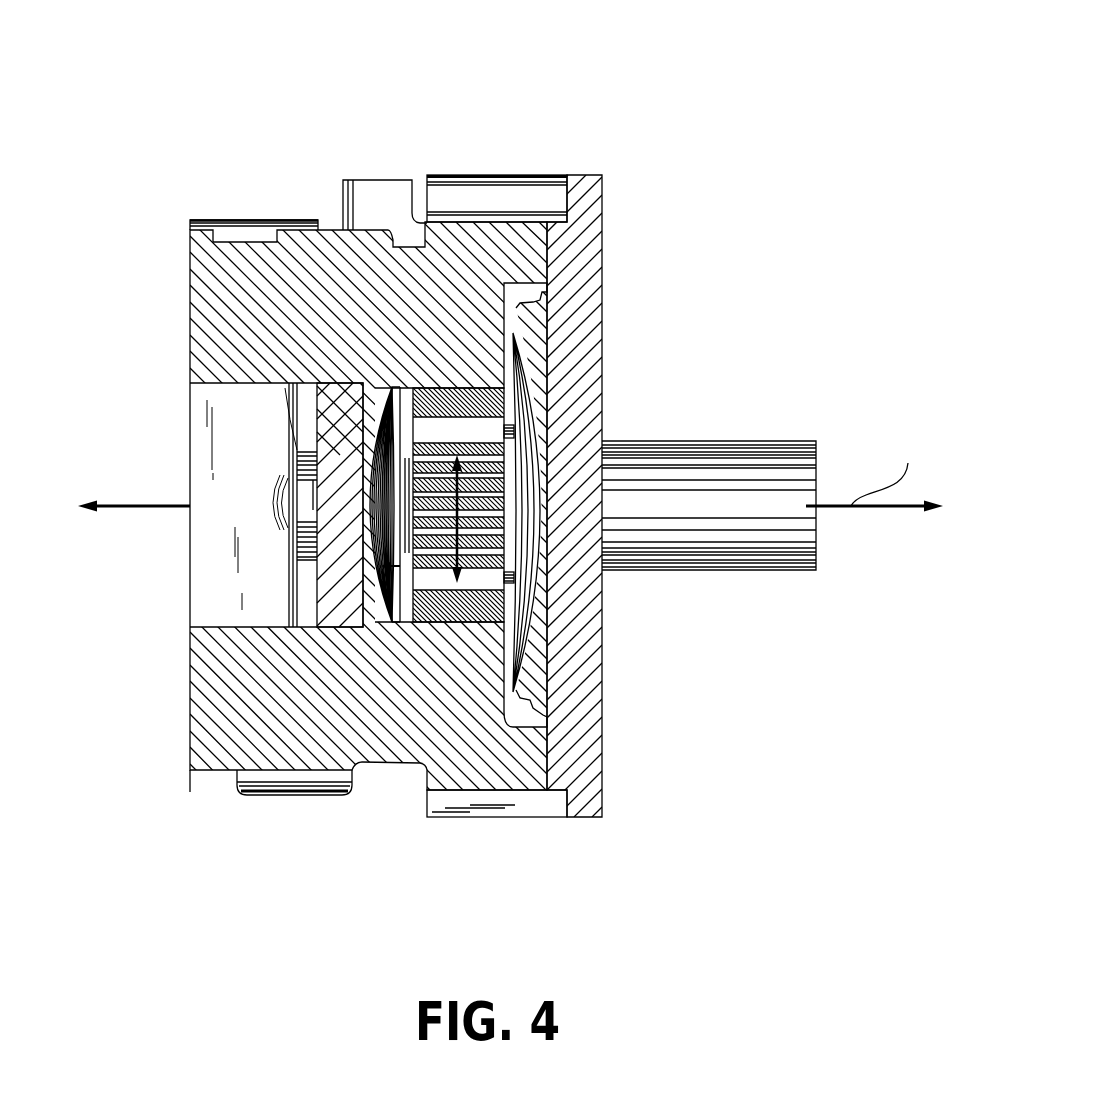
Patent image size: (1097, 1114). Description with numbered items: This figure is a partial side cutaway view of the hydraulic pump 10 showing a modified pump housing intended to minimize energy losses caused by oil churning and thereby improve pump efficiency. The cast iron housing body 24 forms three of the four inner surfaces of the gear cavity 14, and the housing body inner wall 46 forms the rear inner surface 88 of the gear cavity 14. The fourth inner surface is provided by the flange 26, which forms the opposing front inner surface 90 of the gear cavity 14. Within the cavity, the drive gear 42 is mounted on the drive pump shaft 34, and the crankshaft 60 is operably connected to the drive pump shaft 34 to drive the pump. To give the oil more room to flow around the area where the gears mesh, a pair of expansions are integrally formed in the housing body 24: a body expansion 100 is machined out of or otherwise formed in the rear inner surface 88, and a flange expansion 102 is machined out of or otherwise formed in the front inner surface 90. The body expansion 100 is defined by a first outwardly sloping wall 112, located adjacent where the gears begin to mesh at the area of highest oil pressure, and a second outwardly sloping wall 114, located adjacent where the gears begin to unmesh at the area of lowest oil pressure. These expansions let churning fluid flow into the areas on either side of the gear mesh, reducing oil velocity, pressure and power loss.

The hydraulic pump 10 is at (728, 84).
The gear cavity 14 is at (392, 563).
The housing body 24 is at (310, 222).
The flange 26 is at (602, 177).
The drive pump shaft 34 is at (297, 482).
The drive gear 42 is at (490, 560).
The housing body inner wall 46 is at (343, 427).
The crankshaft 60 is at (742, 441).
The rear inner surface 88 is at (385, 420).
The front inner surface 90 is at (503, 335).
The body expansion 100 is at (387, 607).
The flange expansion 102 is at (522, 578).
The first outwardly sloping wall 112 is at (390, 518).
The second outwardly sloping wall 114 is at (373, 542).